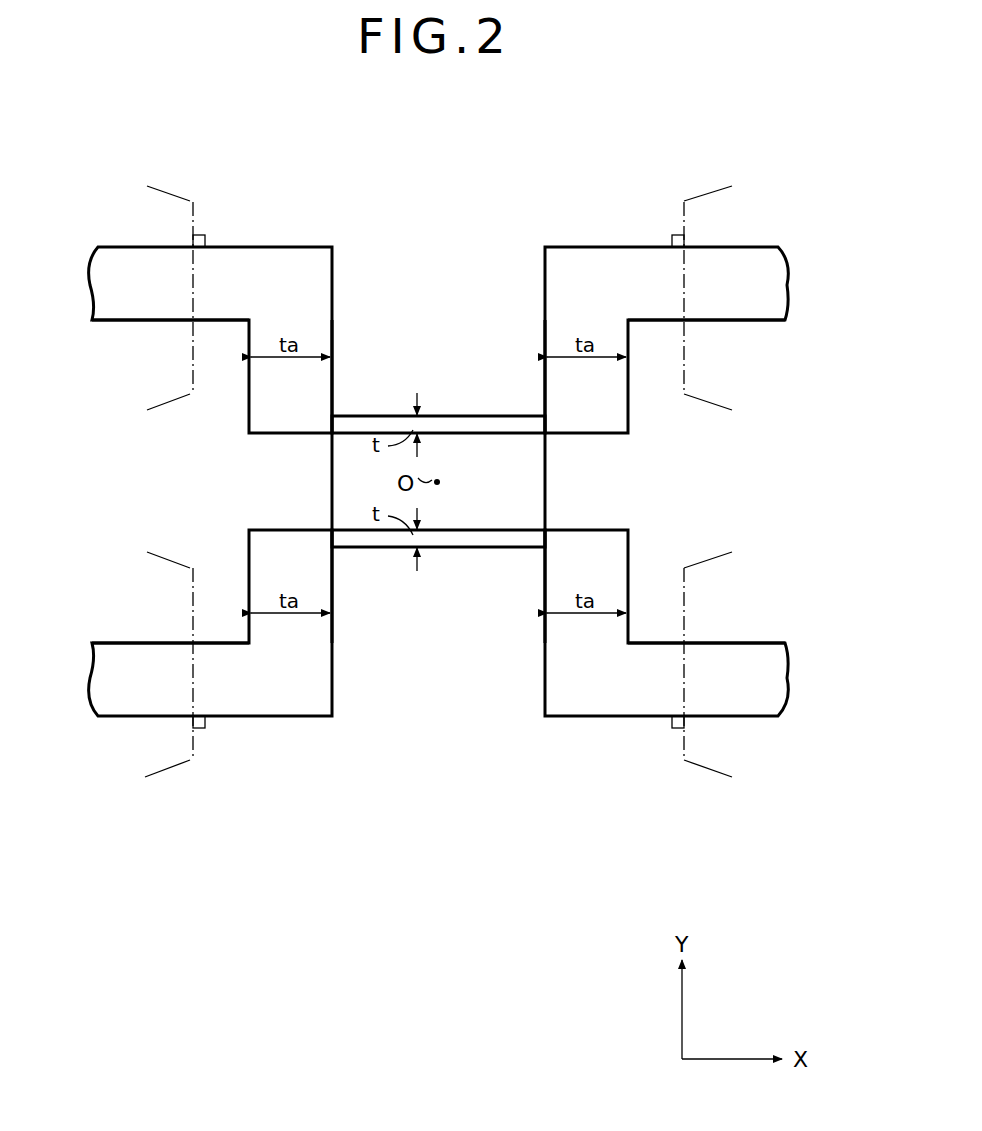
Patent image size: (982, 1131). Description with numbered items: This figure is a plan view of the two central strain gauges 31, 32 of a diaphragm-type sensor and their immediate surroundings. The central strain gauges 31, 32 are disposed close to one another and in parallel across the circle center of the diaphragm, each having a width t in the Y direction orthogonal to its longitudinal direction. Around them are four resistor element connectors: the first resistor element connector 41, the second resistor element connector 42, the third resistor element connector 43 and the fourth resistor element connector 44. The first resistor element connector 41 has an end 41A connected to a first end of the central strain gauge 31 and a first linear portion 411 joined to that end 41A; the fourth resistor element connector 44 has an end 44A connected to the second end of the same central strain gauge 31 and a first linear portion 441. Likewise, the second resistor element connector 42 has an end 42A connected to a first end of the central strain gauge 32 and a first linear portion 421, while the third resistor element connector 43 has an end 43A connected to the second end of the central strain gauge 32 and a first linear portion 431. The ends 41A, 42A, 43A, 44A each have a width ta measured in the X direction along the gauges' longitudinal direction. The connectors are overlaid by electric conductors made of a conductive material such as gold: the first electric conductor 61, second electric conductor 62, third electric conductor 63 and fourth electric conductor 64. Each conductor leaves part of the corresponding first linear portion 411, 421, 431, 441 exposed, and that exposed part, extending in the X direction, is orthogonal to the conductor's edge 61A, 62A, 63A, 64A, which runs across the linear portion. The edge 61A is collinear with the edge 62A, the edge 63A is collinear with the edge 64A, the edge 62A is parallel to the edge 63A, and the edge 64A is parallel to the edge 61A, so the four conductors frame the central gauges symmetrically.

The central strain gauge 31 is at (455, 427).
The central strain gauge 32 is at (453, 537).
The first resistor element connector 41 is at (252, 221).
The second resistor element connector 42 is at (252, 744).
The third resistor element connector 43 is at (625, 744).
The fourth resistor element connector 44 is at (625, 221).
The end 41A is at (318, 383).
The end 42A is at (318, 580).
The end 43A is at (558, 575).
The end 44A is at (558, 390).
The first linear portion 411 is at (137, 308).
The first linear portion 421 is at (137, 652).
The first linear portion 431 is at (742, 652).
The first linear portion 441 is at (742, 308).
The first electric conductor 61 is at (181, 193).
The second electric conductor 62 is at (179, 767).
The third electric conductor 63 is at (697, 767).
The fourth electric conductor 64 is at (696, 193).
The edge 61A is at (193, 368).
The edge 62A is at (193, 598).
The edge 63A is at (684, 598).
The edge 64A is at (684, 368).